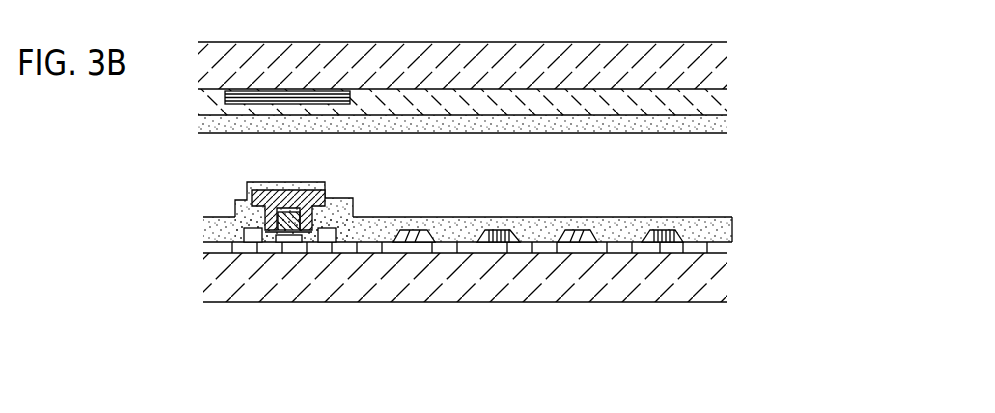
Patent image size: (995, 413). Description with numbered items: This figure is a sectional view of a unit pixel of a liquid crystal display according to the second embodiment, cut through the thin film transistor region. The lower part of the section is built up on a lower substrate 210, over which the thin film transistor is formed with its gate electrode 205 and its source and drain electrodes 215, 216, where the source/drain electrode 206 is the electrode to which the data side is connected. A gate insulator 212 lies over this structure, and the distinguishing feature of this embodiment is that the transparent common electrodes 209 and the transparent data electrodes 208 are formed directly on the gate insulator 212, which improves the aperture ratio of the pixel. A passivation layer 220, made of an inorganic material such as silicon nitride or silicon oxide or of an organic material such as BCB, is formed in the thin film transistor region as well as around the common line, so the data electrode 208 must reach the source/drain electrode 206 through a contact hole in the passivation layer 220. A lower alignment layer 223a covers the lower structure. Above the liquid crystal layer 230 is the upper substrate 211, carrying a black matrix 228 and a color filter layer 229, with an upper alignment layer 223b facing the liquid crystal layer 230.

The gate electrode 205 is at (290, 247).
The source/drain electrode 206 is at (329, 190).
The transparent data electrode 208 is at (496, 242).
The transparent common electrode 209 is at (413, 242).
The lower substrate 210 is at (700, 285).
The upper substrate 211 is at (697, 57).
The gate insulator 212 is at (708, 250).
The source electrode 215 is at (237, 247).
The drain electrode 216 is at (325, 247).
The passivation layer 220 is at (345, 212).
The lower alignment layer 223a is at (715, 230).
The upper alignment layer 223b is at (717, 128).
The black matrix 228 is at (298, 94).
The color filter layer 229 is at (706, 100).
The liquid crystal layer 230 is at (252, 148).